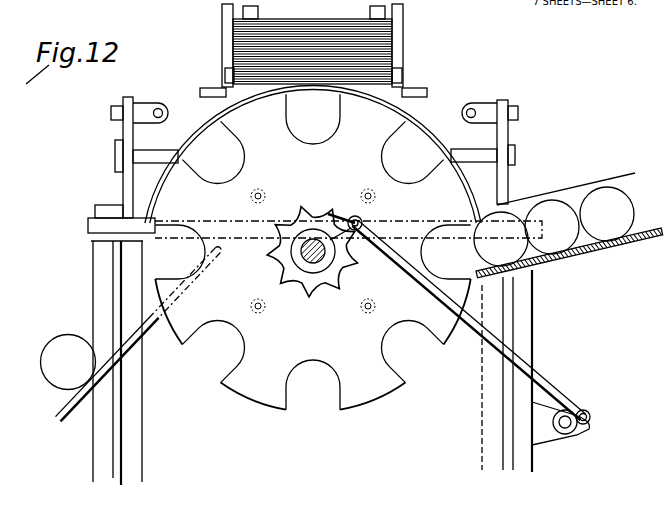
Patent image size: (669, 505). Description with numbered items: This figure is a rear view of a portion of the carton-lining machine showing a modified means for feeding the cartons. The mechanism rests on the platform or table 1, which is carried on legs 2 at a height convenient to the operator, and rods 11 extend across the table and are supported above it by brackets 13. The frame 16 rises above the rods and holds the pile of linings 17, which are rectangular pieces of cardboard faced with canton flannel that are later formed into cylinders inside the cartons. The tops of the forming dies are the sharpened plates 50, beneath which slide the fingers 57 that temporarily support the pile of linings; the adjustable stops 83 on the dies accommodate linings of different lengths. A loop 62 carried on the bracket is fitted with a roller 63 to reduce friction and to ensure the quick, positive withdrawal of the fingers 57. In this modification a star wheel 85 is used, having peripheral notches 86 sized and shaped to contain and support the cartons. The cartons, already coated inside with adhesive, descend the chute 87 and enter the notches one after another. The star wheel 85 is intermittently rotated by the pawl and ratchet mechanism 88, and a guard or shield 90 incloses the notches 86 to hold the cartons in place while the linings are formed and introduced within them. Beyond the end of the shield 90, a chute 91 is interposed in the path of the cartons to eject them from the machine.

The platform or table 1 is at (92, 227).
The legs 2 is at (302, 363).
The rods 11 is at (154, 155).
The brackets 13 is at (506, 184).
The frame 16 is at (404, 38).
The linings 17 is at (290, 19).
The plates 50 is at (221, 98).
The fingers 57 is at (206, 93).
The loop 62 is at (481, 107).
The roller 63 is at (157, 101).
The adjustable stops 83 is at (228, 74).
The star wheel 85 is at (597, 441).
The peripheral notches 86 is at (312, 251).
The chute 87 is at (621, 243).
The pawl and ratchet mechanism 88 is at (332, 215).
The guard or shield 90 is at (423, 120).
The chute 91 is at (150, 334).